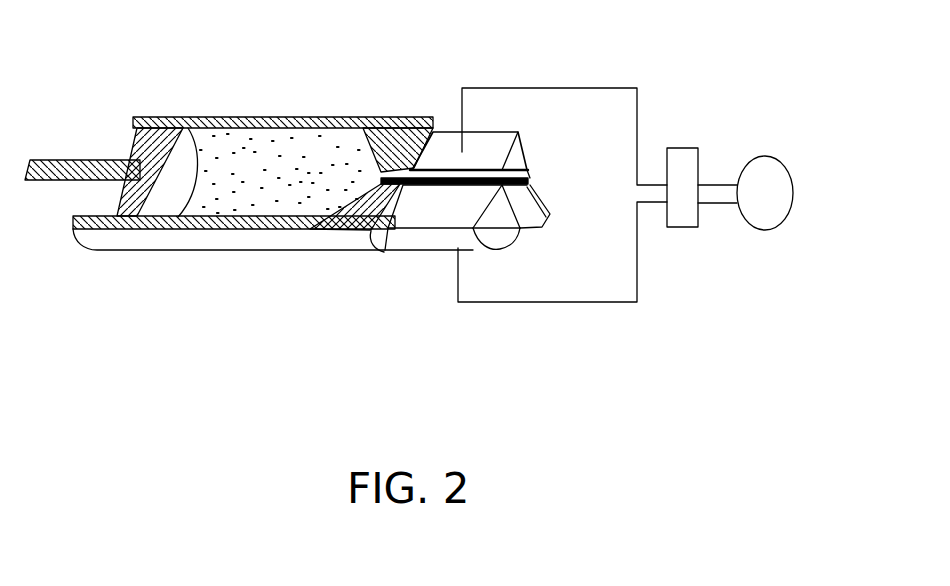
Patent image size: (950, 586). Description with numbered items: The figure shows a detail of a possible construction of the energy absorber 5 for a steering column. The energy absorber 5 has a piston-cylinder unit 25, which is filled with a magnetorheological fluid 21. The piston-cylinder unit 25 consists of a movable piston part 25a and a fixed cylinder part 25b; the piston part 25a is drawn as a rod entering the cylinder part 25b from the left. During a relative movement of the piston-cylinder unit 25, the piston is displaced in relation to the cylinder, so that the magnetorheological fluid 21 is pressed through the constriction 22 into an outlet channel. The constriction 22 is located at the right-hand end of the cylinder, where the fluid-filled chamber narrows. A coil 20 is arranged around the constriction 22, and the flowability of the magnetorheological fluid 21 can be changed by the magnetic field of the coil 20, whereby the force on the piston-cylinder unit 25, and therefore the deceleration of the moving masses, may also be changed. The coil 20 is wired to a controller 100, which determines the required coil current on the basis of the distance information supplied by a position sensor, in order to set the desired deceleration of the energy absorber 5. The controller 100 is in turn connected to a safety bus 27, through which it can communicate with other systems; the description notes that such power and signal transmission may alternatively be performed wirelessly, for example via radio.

The energy absorber 5 is at (228, 267).
The coil 20 is at (413, 243).
The magnetorheological fluid 21 is at (240, 170).
The constriction 22 is at (380, 178).
The piston-cylinder unit 25 is at (183, 128).
The movable piston part 25a is at (147, 153).
The fixed cylinder part 25b is at (175, 237).
The safety bus 27 is at (768, 173).
The controller 100 is at (676, 160).